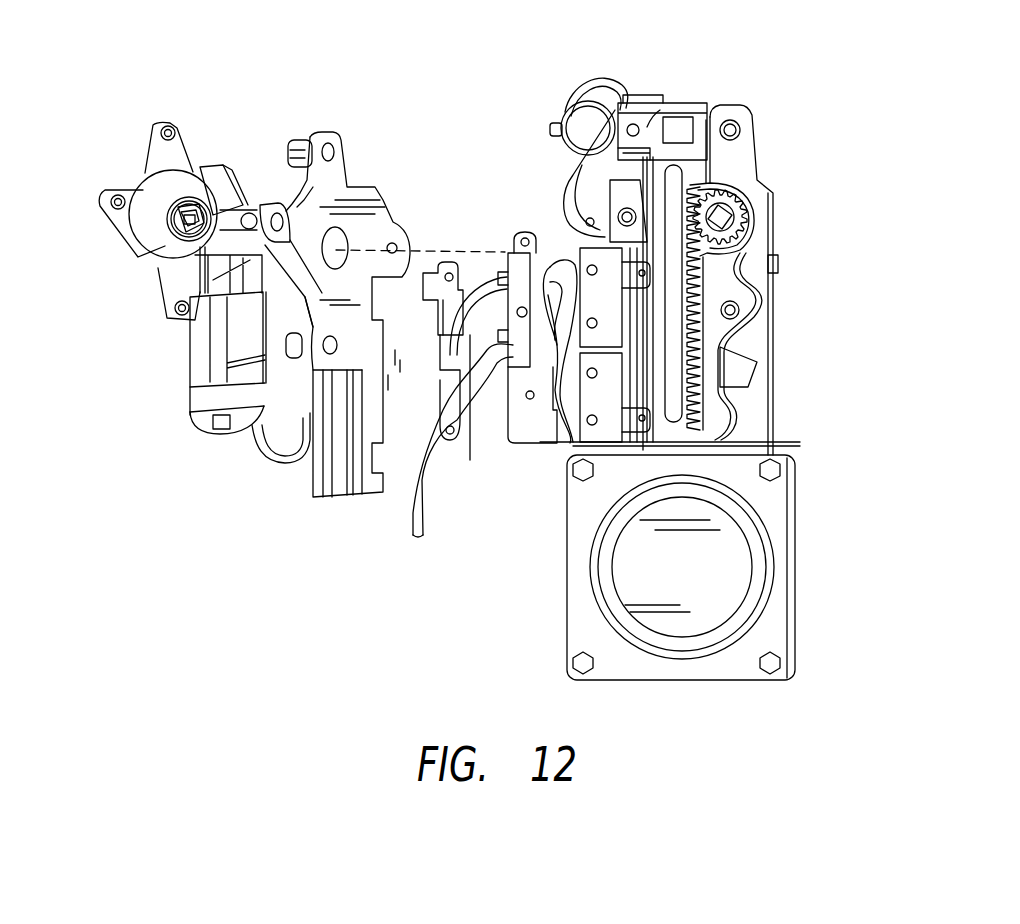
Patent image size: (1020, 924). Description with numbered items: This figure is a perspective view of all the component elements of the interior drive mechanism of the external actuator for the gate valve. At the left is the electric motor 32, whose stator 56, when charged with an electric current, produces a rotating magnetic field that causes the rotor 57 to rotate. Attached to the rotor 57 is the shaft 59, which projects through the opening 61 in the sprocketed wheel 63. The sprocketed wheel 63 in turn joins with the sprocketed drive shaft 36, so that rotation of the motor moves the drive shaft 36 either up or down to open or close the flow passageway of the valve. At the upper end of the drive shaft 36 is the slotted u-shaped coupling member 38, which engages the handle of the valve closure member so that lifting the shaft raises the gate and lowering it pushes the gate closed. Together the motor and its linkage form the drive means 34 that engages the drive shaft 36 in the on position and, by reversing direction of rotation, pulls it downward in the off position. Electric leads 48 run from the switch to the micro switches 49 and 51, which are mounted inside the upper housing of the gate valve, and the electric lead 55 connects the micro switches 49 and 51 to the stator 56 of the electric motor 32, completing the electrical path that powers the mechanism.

The electric motor 32 is at (190, 425).
The drive means 34 is at (193, 168).
The drive shaft 36 is at (778, 437).
The slotted u-shaped coupling member 38 is at (655, 100).
The electric leads 48 is at (407, 518).
The micro switch 49 is at (540, 480).
The micro switch 51 is at (660, 238).
The electric lead 55 is at (478, 282).
The stator 56 is at (207, 351).
The rotor 57 is at (165, 190).
The shaft 59 is at (185, 228).
The opening 61 is at (690, 233).
The sprocketed wheel 63 is at (740, 200).